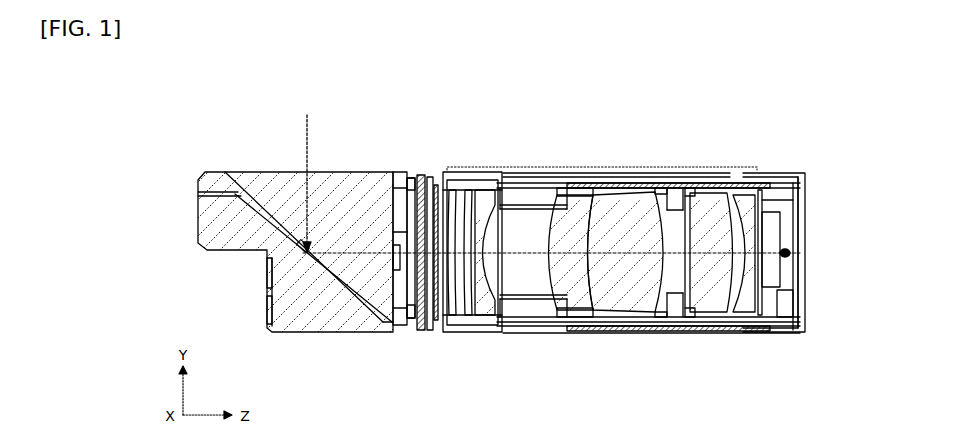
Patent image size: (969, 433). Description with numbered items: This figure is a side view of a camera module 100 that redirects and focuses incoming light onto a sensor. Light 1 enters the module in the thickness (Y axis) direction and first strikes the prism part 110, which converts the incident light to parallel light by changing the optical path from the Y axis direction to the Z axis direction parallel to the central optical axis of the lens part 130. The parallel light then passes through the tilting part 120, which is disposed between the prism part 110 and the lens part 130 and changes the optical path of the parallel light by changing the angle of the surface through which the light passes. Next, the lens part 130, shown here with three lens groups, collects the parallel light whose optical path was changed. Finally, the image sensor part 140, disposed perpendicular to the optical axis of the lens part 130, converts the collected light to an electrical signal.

The camera module 100 is at (160, 94).
The light 1 is at (306, 139).
The prism part 110 is at (360, 190).
The tilting part 120 is at (418, 172).
The lens part 130 is at (612, 167).
The image sensor part 140 is at (808, 205).